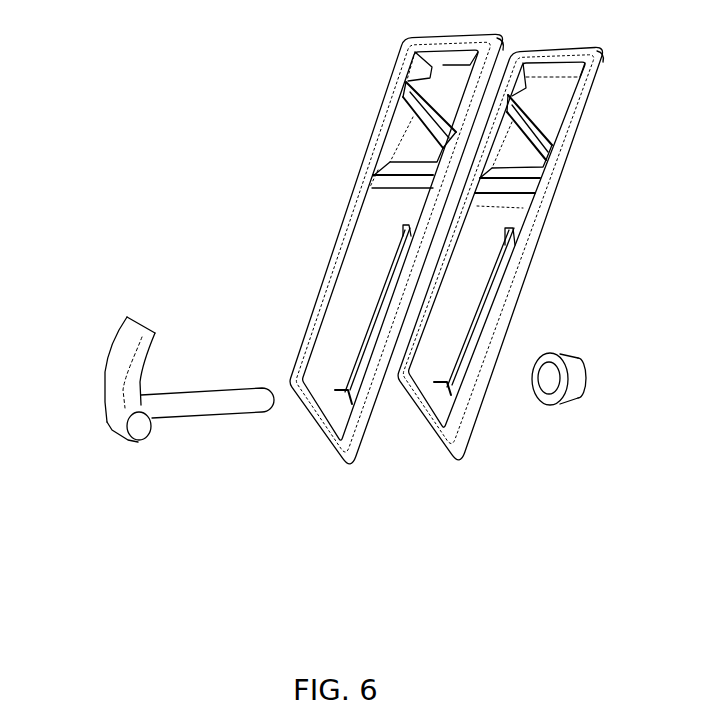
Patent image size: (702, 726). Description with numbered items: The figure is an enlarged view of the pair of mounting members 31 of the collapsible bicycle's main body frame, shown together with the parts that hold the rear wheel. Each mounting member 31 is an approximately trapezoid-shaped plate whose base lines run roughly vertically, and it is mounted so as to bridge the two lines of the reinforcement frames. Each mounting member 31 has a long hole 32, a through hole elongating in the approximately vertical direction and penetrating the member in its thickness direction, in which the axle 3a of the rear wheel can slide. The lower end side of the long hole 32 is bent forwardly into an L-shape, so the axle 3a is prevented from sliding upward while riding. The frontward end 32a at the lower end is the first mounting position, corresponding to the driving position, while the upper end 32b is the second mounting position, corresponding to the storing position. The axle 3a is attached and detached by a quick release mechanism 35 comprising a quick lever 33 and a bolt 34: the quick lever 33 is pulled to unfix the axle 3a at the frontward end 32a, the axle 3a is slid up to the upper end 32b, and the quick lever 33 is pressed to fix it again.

The mounting member 31 is at (385, 120).
The long hole 32 is at (386, 282).
The frontward end 32a is at (330, 394).
The upper end 32b is at (396, 223).
The quick lever 33 is at (121, 344).
The axle 3a is at (193, 410).
The bolt 34 is at (580, 397).
The quick release mechanism 35 is at (158, 402).